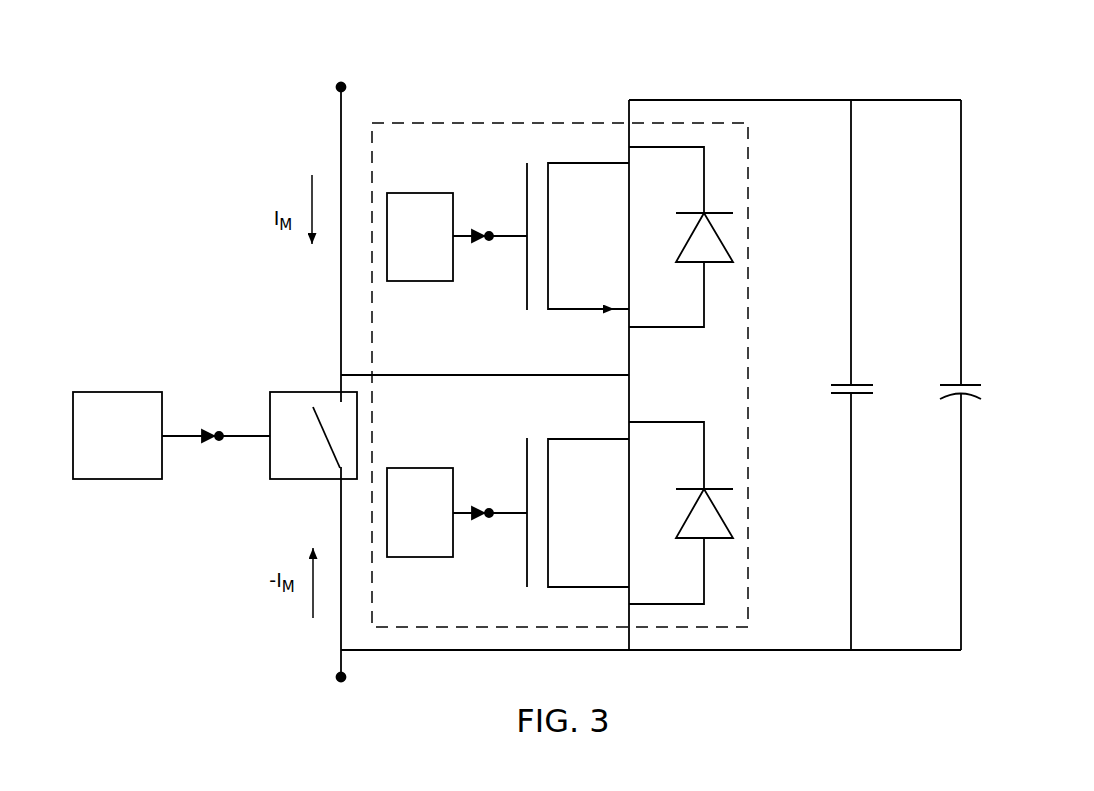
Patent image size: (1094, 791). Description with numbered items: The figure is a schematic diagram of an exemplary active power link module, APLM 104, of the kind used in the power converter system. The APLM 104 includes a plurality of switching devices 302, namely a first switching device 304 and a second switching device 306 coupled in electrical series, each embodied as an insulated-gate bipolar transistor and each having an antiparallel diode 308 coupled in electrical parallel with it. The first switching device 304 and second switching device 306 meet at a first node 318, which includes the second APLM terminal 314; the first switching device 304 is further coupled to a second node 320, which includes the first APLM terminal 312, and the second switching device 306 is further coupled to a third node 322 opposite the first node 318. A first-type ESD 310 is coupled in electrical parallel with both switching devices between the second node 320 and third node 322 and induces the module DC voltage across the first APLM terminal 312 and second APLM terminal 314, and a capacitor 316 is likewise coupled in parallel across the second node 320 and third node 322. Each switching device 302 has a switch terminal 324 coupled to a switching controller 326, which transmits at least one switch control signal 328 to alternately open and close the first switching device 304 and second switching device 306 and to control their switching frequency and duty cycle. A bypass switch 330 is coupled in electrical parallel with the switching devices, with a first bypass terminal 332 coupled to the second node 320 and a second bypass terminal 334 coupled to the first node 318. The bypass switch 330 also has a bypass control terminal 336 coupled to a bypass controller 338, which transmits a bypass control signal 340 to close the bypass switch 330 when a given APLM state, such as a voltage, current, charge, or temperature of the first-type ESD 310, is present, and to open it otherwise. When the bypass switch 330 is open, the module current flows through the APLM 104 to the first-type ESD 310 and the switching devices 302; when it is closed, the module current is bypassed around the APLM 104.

The active power link module (APLM) 104 is at (187, 63).
The switching devices 302 is at (400, 123).
The first switching device 304 is at (538, 580).
The second switching device 306 is at (548, 152).
The antiparallel diode 308 is at (727, 253).
The first-type ESD 310 is at (985, 391).
The first APLM terminal 312 is at (341, 667).
The second APLM terminal 314 is at (341, 108).
The capacitor 316 is at (843, 394).
The first node 318 is at (629, 360).
The second node 320 is at (797, 650).
The third node 322 is at (794, 100).
The switch terminal 324 is at (518, 227).
The switching controller 326 is at (420, 375).
The switch control signal 328 is at (461, 243).
The bypass switch 330 is at (313, 435).
The first bypass terminal 332 is at (332, 457).
The second bypass terminal 334 is at (340, 397).
The bypass control terminal 336 is at (248, 429).
The bypass controller 338 is at (117, 435).
The bypass control signal 340 is at (186, 440).